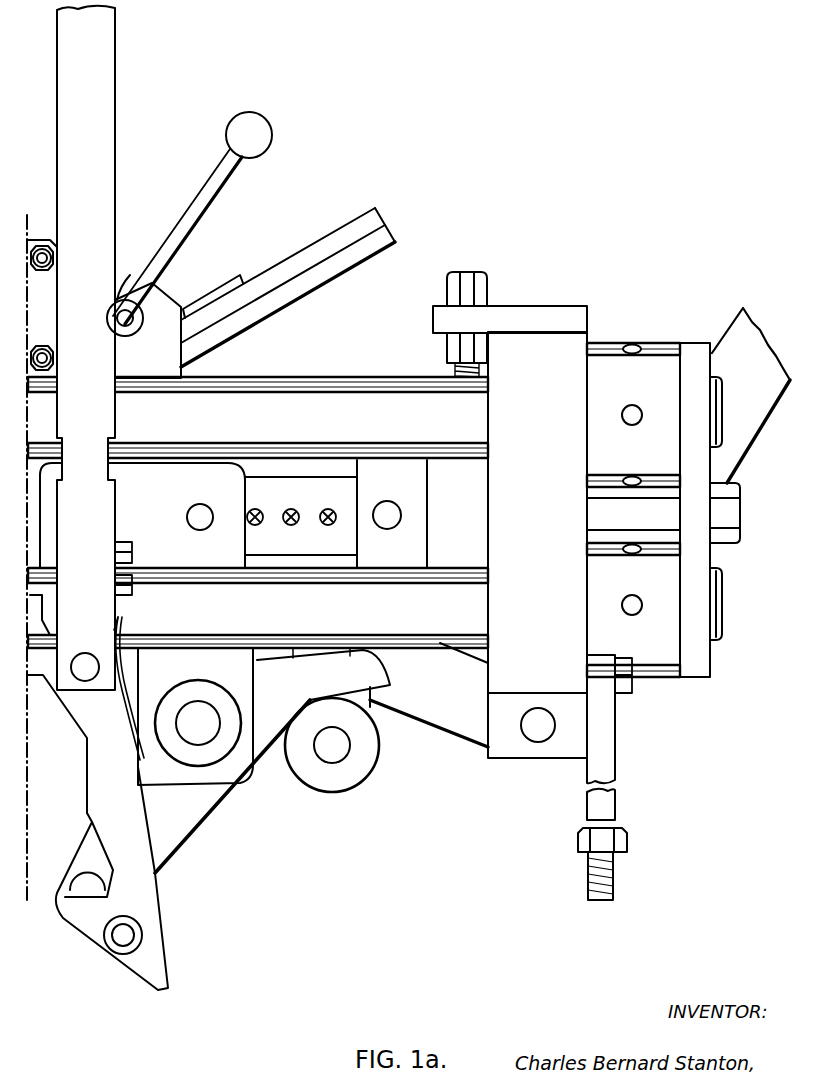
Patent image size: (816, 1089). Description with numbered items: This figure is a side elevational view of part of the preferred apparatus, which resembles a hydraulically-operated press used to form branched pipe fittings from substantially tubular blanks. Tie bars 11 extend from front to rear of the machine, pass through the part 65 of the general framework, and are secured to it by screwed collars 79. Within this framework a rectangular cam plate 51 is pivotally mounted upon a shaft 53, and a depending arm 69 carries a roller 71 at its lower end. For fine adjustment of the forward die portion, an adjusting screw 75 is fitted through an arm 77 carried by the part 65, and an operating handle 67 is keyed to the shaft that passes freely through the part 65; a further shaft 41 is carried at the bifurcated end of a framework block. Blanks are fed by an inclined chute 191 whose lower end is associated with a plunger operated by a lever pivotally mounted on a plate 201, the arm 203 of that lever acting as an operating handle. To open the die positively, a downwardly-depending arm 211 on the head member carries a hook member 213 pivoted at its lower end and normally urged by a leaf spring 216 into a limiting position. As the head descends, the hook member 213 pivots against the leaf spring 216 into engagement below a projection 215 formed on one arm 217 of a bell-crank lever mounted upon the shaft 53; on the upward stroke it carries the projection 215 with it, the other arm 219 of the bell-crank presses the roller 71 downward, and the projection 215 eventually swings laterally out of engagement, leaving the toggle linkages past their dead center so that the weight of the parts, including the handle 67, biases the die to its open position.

The tie bars 11 is at (282, 413).
The shaft 41 is at (387, 512).
The cam plate 51 is at (245, 688).
The shaft 53 is at (198, 735).
The part of the general framework 65 is at (550, 370).
The operating handle 67 is at (738, 332).
The depending arm 69 is at (362, 698).
The roller 71 is at (343, 775).
The adjusting screw 75 is at (457, 373).
The arm 77 is at (502, 318).
The screwed collars 79 is at (655, 373).
The inclined chute 191 is at (337, 247).
The plate 201 is at (157, 308).
The arm of the lever 203 is at (210, 183).
The downwardly-depending arm 211 is at (97, 95).
The hook member 213 is at (140, 905).
The projection 215 is at (85, 887).
The leaf spring 216 is at (142, 665).
The arm of the bell-crank lever 217 is at (182, 818).
The other arm of the bell-crank lever 219 is at (367, 670).